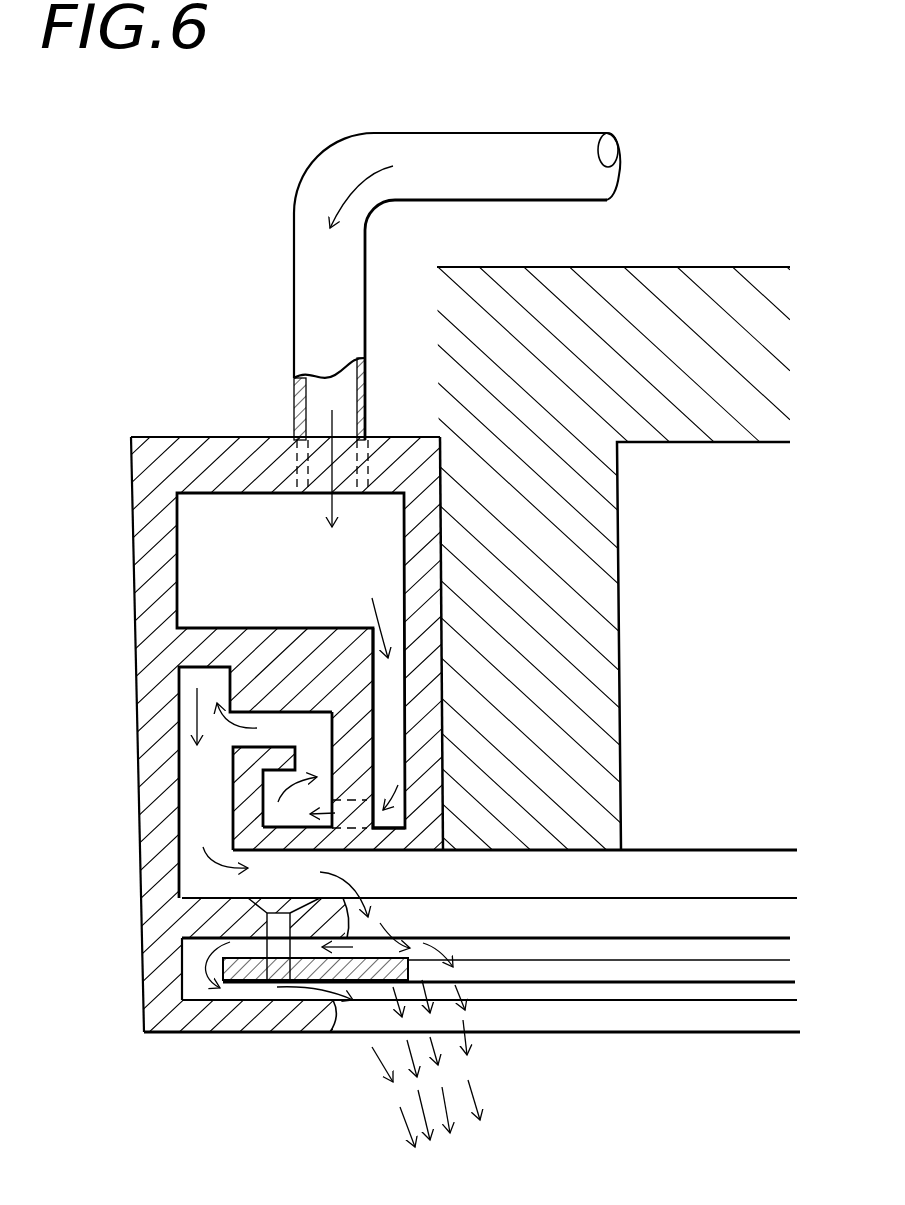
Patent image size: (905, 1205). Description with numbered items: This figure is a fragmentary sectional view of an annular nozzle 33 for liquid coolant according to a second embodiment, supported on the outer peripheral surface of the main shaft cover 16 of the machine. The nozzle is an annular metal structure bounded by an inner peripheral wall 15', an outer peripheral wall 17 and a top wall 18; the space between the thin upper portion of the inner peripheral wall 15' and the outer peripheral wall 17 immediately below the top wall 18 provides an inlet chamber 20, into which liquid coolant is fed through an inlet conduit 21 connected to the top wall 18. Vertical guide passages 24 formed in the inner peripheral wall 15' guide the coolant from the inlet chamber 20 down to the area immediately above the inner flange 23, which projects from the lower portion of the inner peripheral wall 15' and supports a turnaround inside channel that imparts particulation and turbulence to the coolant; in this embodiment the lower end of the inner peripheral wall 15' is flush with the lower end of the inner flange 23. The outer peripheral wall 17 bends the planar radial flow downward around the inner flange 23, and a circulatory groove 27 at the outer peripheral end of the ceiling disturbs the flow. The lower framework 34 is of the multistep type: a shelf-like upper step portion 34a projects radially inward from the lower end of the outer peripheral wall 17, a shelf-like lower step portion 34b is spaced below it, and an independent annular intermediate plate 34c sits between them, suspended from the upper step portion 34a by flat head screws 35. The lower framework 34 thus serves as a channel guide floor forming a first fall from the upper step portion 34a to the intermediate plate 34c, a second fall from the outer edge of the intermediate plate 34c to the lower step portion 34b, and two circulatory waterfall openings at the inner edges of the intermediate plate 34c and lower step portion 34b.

The inner peripheral wall 15' is at (281, 683).
The main shaft cover 16 is at (715, 270).
The outer peripheral wall 17 is at (147, 710).
The top wall 18 is at (252, 450).
The inlet chamber 20 is at (312, 603).
The inlet conduit 21 is at (472, 150).
The inner flange 23 is at (230, 803).
The vertical guide passages 24 is at (393, 707).
The circulatory groove 27 is at (177, 683).
The annular nozzle 33 is at (158, 347).
The lower framework 34 is at (265, 1033).
The upper step portion 34a is at (222, 905).
The lower step portion 34b is at (208, 1038).
The intermediate plate 34c is at (362, 985).
The flat head screws 35 is at (255, 923).